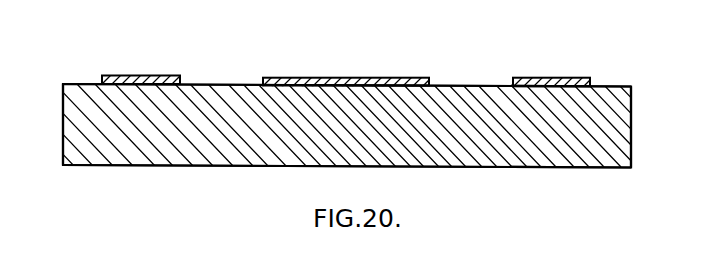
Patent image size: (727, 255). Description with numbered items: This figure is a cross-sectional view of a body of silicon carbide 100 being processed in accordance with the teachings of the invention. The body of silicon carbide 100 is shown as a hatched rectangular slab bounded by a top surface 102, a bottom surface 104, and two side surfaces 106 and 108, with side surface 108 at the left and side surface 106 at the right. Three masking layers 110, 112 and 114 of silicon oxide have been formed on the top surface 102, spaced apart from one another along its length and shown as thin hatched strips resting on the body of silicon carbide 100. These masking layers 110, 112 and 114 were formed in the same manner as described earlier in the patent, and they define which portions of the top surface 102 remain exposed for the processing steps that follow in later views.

The body of silicon carbide 100 is at (613, 112).
The top surface 102 is at (618, 86).
The bottom surface 104 is at (611, 168).
The side surface 106 is at (632, 130).
The side surface 108 is at (63, 121).
The masking layer 110 is at (167, 75).
The masking layer 112 is at (375, 77).
The masking layer 114 is at (568, 78).